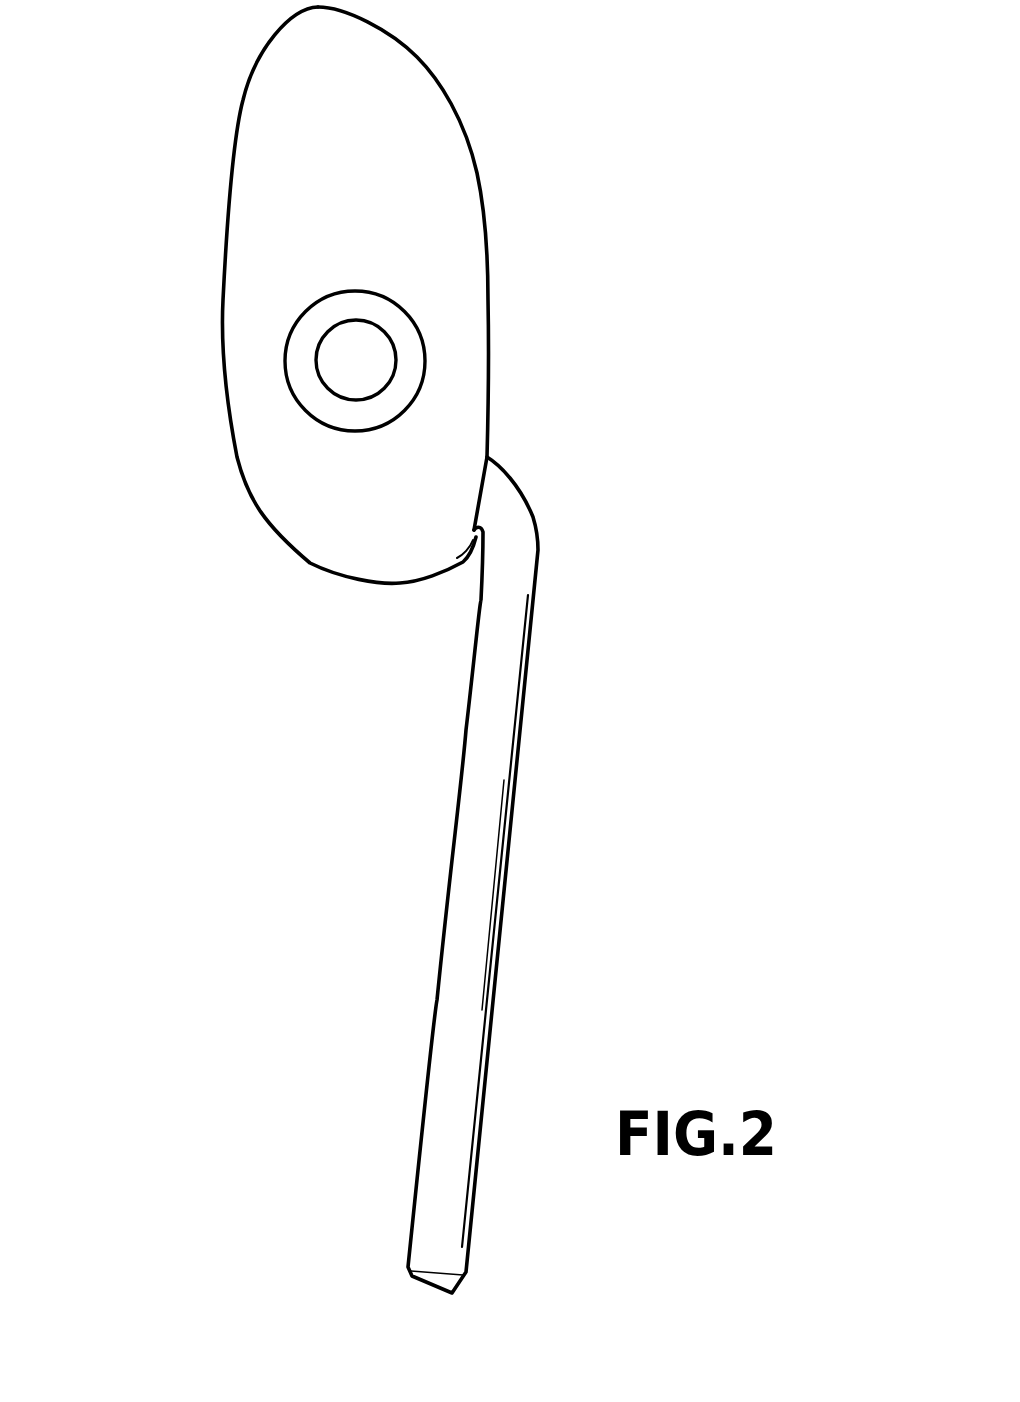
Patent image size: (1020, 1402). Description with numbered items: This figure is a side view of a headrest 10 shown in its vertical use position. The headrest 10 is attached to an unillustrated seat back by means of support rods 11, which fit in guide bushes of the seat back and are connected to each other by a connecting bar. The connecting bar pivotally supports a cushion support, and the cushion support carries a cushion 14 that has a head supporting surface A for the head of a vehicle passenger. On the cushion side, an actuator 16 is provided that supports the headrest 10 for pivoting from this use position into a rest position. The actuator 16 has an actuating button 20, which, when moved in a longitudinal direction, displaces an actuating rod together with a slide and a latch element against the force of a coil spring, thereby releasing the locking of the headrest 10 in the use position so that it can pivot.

The headrest 10 is at (345, 650).
The head supporting surface A is at (332, 295).
The cushion 14 is at (438, 217).
The actuator 16 is at (355, 385).
The actuating button 20 is at (368, 353).
The support rods 11 is at (503, 735).